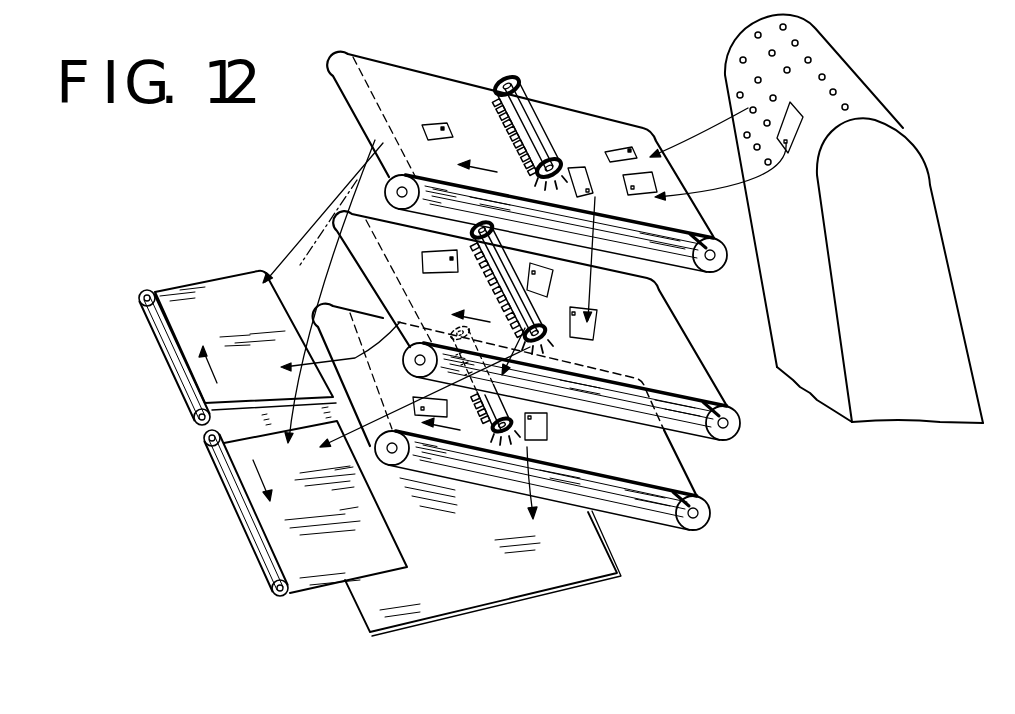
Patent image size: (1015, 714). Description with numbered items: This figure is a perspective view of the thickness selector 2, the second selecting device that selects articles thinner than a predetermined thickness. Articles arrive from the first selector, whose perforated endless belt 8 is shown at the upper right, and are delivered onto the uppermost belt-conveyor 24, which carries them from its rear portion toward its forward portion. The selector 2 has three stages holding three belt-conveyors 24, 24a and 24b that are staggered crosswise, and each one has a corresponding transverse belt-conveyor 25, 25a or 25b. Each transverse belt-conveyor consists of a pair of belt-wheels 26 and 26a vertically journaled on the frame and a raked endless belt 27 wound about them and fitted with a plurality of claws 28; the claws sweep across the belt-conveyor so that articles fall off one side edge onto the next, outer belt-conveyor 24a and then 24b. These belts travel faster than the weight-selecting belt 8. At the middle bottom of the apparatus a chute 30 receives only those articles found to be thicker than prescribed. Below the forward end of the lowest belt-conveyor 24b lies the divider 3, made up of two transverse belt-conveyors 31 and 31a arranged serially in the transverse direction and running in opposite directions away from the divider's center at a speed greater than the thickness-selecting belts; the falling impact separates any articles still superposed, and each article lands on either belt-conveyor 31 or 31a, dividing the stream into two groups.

The thickness selector 2 is at (477, 72).
The divider 3 is at (198, 431).
The perforated endless belt 8 is at (865, 95).
The belt-conveyor 24 is at (391, 70).
The belt-conveyor 24a is at (690, 352).
The belt-conveyor 24b is at (687, 470).
The transverse belt-conveyor 25 is at (542, 113).
The transverse belt-conveyor 25a is at (487, 300).
The transverse belt-conveyor 25b is at (520, 433).
The belt-wheel 26 is at (513, 84).
The belt-wheel 26a is at (556, 223).
The raked endless belt 27 is at (552, 144).
The claws 28 is at (503, 137).
The chute 30 is at (551, 580).
The transverse belt-conveyor 31 is at (177, 332).
The transverse belt-conveyor 31a is at (257, 508).